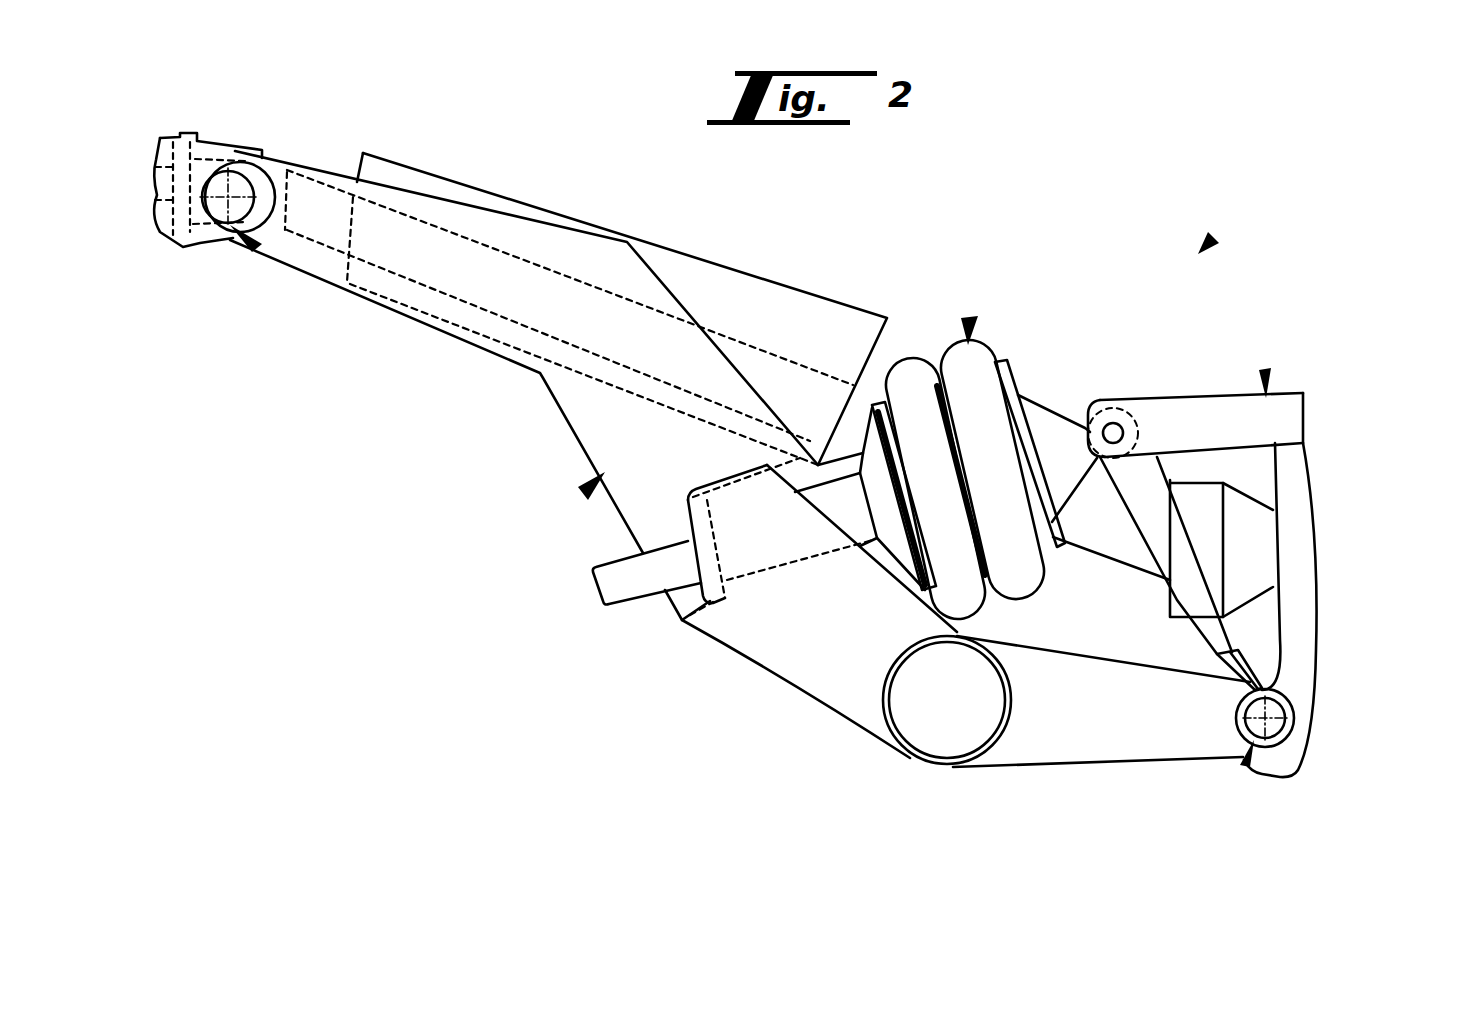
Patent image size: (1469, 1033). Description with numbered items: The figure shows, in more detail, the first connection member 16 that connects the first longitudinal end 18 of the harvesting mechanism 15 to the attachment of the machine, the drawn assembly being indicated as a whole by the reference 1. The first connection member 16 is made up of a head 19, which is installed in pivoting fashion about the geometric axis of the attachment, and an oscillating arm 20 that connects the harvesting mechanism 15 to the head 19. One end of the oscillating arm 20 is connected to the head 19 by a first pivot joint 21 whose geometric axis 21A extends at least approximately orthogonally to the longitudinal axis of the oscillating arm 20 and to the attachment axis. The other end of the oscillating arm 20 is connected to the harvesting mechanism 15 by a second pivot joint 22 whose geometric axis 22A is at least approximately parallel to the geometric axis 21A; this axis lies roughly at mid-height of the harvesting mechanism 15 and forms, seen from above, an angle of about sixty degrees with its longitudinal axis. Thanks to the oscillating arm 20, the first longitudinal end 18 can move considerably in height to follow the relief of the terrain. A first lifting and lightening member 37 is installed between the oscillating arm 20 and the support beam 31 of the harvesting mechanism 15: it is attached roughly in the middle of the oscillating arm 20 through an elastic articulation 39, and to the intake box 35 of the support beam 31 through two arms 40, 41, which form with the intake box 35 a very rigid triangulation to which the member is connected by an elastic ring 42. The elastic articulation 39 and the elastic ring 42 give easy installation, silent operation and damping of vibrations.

The suspension assembly 1 is at (1200, 251).
The harvesting mechanism 15 is at (1265, 393).
The first connection member 16 is at (600, 473).
The first longitudinal end 18 is at (1218, 400).
The head 19 is at (205, 248).
The oscillating arm 20 is at (550, 390).
The first pivot joint 21 is at (236, 233).
The geometric axis 21A is at (232, 195).
The second pivot joint 22 is at (1248, 762).
The geometric axis 22A is at (1265, 718).
The support beam 31 is at (1305, 400).
The intake box 35 is at (1312, 575).
The first lifting and lightening member 37 is at (968, 343).
The elastic articulation 39 is at (727, 598).
The arm 40 is at (1297, 433).
The arm 41 is at (1217, 642).
The elastic ring 42 is at (1113, 428).